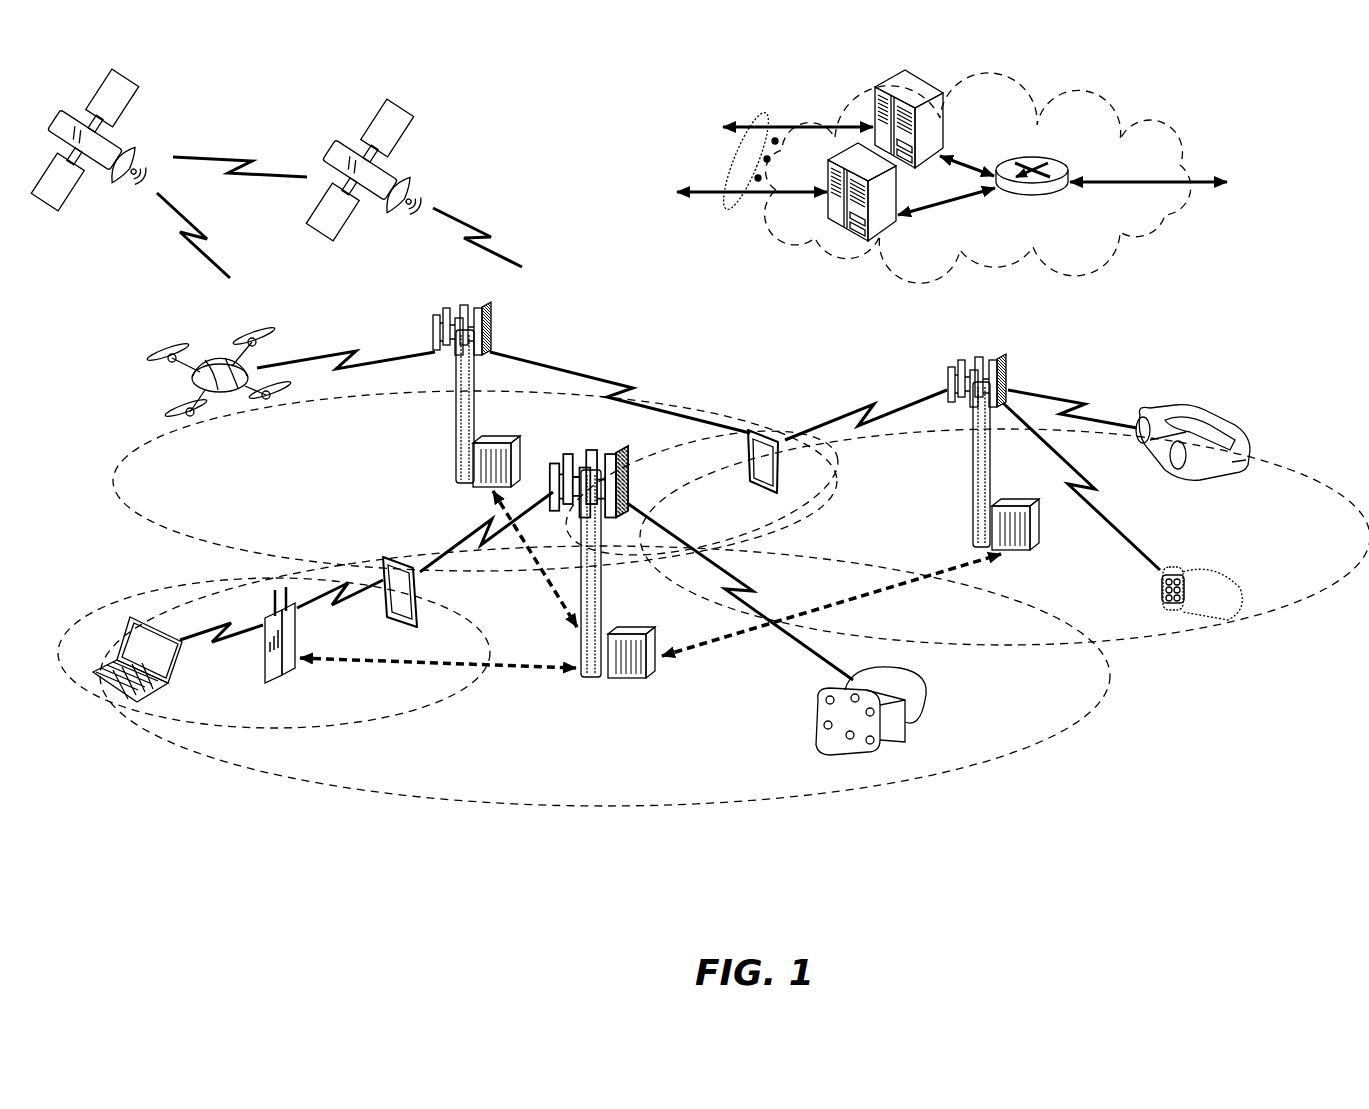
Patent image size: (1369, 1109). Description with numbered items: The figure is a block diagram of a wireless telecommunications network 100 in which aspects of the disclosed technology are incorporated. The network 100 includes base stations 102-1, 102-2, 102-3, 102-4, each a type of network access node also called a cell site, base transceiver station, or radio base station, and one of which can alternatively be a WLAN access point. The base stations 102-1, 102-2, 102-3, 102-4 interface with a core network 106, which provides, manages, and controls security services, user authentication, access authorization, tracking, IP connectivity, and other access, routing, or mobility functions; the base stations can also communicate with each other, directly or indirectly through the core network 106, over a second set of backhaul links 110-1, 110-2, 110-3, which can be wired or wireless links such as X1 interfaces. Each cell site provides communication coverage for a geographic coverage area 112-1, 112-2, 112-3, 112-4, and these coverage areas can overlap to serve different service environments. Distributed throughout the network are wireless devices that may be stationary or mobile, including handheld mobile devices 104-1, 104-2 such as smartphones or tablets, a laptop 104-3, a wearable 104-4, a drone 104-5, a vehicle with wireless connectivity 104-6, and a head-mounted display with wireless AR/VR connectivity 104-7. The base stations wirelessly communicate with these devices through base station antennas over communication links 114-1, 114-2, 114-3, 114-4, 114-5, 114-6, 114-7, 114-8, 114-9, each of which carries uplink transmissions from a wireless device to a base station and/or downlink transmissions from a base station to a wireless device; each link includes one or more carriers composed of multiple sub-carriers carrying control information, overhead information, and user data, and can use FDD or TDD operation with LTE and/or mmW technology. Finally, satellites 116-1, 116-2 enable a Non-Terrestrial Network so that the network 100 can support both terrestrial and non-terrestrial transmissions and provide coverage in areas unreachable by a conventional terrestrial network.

The wireless telecommunications network 100 is at (1299, 138).
The satellite 116-1 is at (142, 141).
The satellite 116-2 is at (418, 192).
The core network 106 is at (1063, 245).
The base station 102-1 is at (593, 683).
The base station 102-2 is at (456, 432).
The base station 102-3 is at (970, 465).
The base station 102-4 is at (265, 662).
The handheld mobile device 104-1 is at (418, 607).
The handheld mobile device 104-2 is at (750, 468).
The laptop 104-3 is at (120, 697).
The wearable 104-4 is at (1170, 568).
The drone 104-5 is at (225, 400).
The vehicle with wireless connectivity 104-6 is at (1215, 420).
The head-mounted display 104-7 is at (928, 690).
The backhaul link 110-1 is at (337, 663).
The backhaul link 110-2 is at (893, 590).
The backhaul link 110-3 is at (553, 588).
The geographic coverage area 112-1 is at (520, 803).
The geographic coverage area 112-2 is at (397, 717).
The geographic coverage area 112-3 is at (177, 535).
The geographic coverage area 112-4 is at (1275, 468).
The communication link 114-1 is at (797, 580).
The communication link 114-2 is at (482, 537).
The communication link 114-3 is at (190, 640).
The communication link 114-4 is at (335, 605).
The communication link 114-5 is at (343, 350).
The communication link 114-6 is at (630, 386).
The communication link 114-7 is at (870, 405).
The communication link 114-8 is at (1097, 500).
The communication link 114-9 is at (1070, 400).